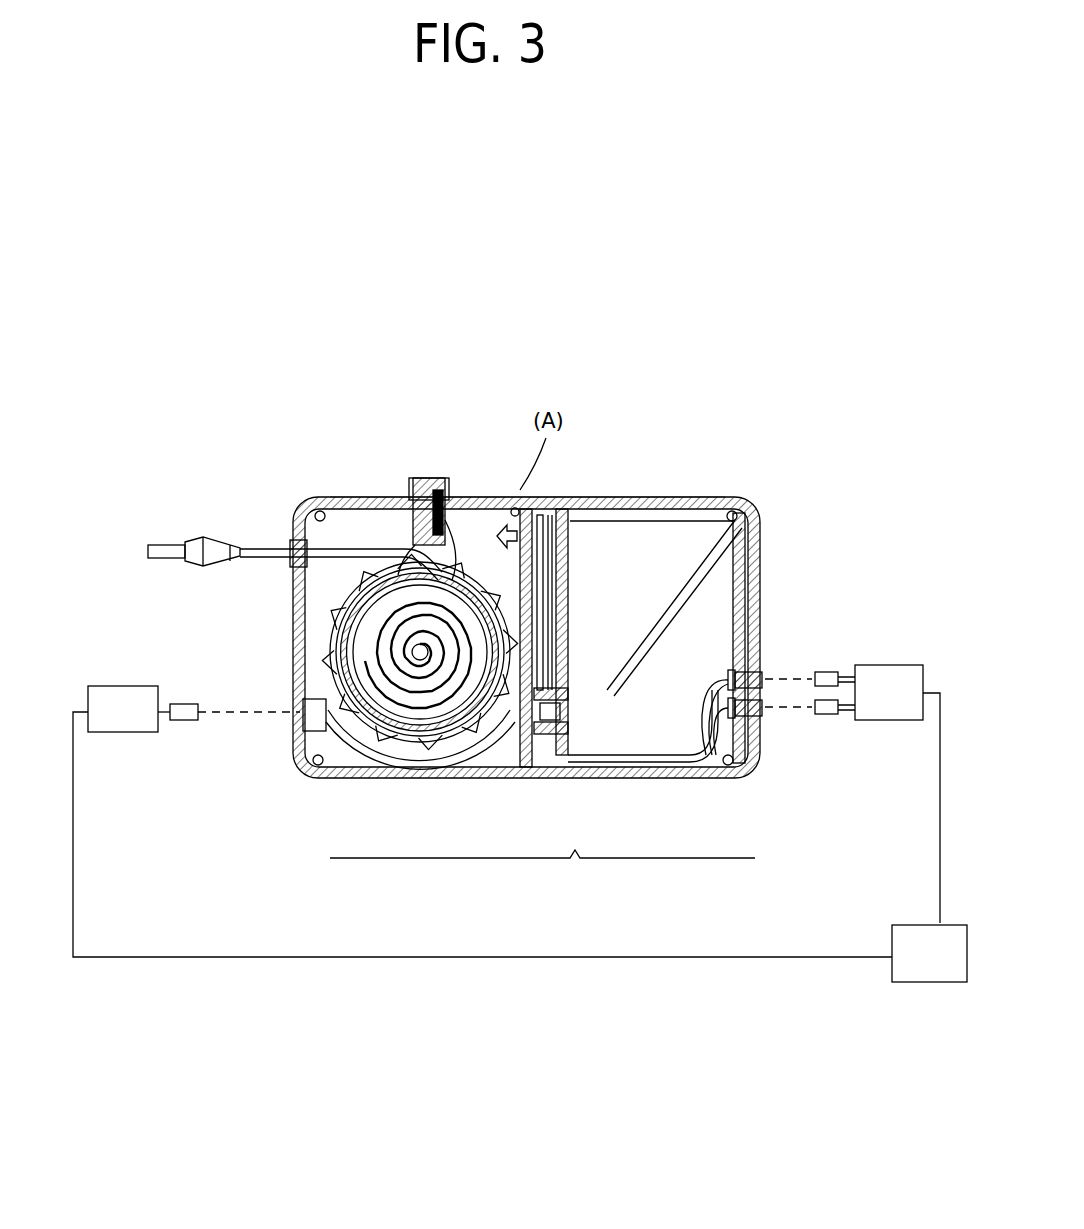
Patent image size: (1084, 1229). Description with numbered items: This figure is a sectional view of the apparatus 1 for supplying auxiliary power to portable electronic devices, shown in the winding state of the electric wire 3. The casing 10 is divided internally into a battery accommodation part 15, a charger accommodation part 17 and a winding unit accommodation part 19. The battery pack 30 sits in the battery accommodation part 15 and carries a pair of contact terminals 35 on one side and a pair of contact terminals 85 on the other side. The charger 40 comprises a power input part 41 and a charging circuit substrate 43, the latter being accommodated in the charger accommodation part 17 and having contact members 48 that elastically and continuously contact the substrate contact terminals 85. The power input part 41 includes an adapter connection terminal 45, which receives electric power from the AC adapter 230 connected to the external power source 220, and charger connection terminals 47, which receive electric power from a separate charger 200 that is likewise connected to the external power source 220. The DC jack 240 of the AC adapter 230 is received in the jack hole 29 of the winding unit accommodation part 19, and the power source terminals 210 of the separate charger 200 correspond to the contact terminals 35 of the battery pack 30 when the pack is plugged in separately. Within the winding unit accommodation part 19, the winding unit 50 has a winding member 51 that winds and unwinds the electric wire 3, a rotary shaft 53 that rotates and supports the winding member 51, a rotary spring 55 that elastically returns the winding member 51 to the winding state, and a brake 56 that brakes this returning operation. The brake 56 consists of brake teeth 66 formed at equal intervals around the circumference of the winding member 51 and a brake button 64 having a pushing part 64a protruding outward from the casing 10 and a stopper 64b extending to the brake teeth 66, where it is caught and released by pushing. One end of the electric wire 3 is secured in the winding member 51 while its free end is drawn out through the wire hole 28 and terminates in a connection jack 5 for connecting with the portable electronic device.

The hose reel device 1 is at (746, 282).
The electric wire 3 is at (260, 549).
The connection jack 5 is at (200, 545).
The casing 10 is at (760, 497).
The battery accommodation part 15 is at (665, 503).
The charger accommodation part 17 is at (545, 512).
The winding unit accommodation part 19 is at (497, 508).
The wire hole 28 is at (298, 548).
The jack hole 29 is at (300, 720).
The battery pack 30 is at (725, 590).
The contact terminals 35 is at (740, 672).
The charger 40 is at (572, 905).
The power input part 41 is at (590, 895).
The charging circuit substrate 43 is at (566, 508).
The adapter connection terminal 45 is at (330, 780).
The charger connection terminals 47 is at (770, 690).
The contact members 48 is at (520, 770).
The winding unit 50 is at (345, 631).
The winding member 51 is at (412, 650).
The rotary shaft 53 is at (364, 677).
The rotary spring 55 is at (338, 692).
The brake 56 is at (408, 514).
The brake button 64 is at (443, 453).
The pushing part 64a is at (424, 478).
The stopper 64b is at (462, 490).
The brake teeth 66 is at (445, 510).
The contact terminals 85 is at (580, 760).
The separate charger 200 is at (890, 722).
The power source terminals 210 is at (828, 670).
The external power source 220 is at (925, 985).
The AC adapter 230 is at (112, 734).
The DC jack 240 is at (182, 722).